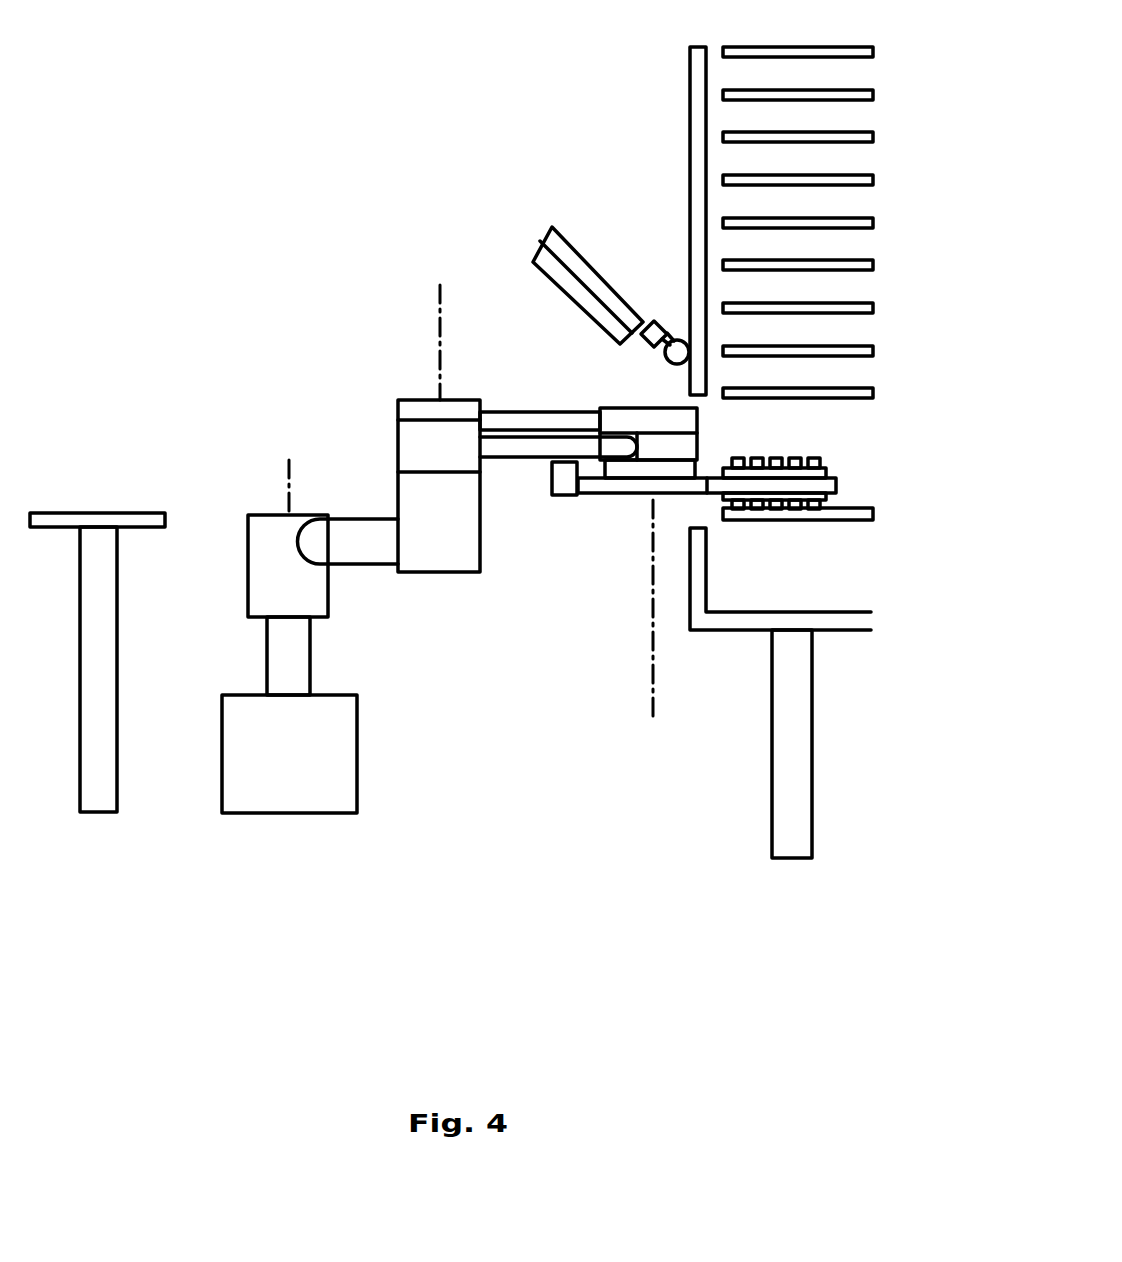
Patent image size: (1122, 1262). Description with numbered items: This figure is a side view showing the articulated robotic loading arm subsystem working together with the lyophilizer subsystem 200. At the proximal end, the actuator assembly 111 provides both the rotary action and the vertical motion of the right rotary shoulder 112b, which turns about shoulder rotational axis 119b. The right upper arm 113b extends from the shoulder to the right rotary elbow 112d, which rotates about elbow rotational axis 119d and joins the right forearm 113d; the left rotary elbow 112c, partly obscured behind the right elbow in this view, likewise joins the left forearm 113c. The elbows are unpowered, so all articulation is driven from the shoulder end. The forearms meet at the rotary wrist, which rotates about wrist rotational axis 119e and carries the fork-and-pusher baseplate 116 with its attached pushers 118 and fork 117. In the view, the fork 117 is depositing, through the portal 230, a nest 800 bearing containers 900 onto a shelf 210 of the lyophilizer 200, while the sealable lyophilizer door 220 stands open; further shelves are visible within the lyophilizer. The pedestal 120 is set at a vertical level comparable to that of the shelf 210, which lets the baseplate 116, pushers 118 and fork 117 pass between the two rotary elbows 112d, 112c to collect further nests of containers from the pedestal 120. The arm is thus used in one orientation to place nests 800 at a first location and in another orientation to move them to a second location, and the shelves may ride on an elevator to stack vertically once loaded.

The actuator assembly 111 is at (325, 762).
The right rotary shoulder 112b is at (292, 583).
The left rotary elbow 112c is at (405, 398).
The right rotary elbow 112d is at (412, 437).
The right upper arm 113b is at (350, 538).
The left forearm 113c is at (557, 445).
The right forearm 113d is at (515, 412).
The fork-and-pusher baseplate 116 is at (633, 490).
The fork 117 is at (838, 486).
The pushers 118 is at (563, 477).
The shoulder rotational axis 119b is at (288, 487).
The elbow rotational axis 119d is at (432, 333).
The wrist rotational axis 119e is at (653, 695).
The pedestal 120 is at (68, 510).
The lyophilizer subsystem 200 is at (690, 143).
The shelf 210 is at (828, 520).
The lyophilizer door 220 is at (550, 228).
The portal 230 is at (700, 518).
The nest 800 is at (827, 471).
The containers 900 is at (819, 457).